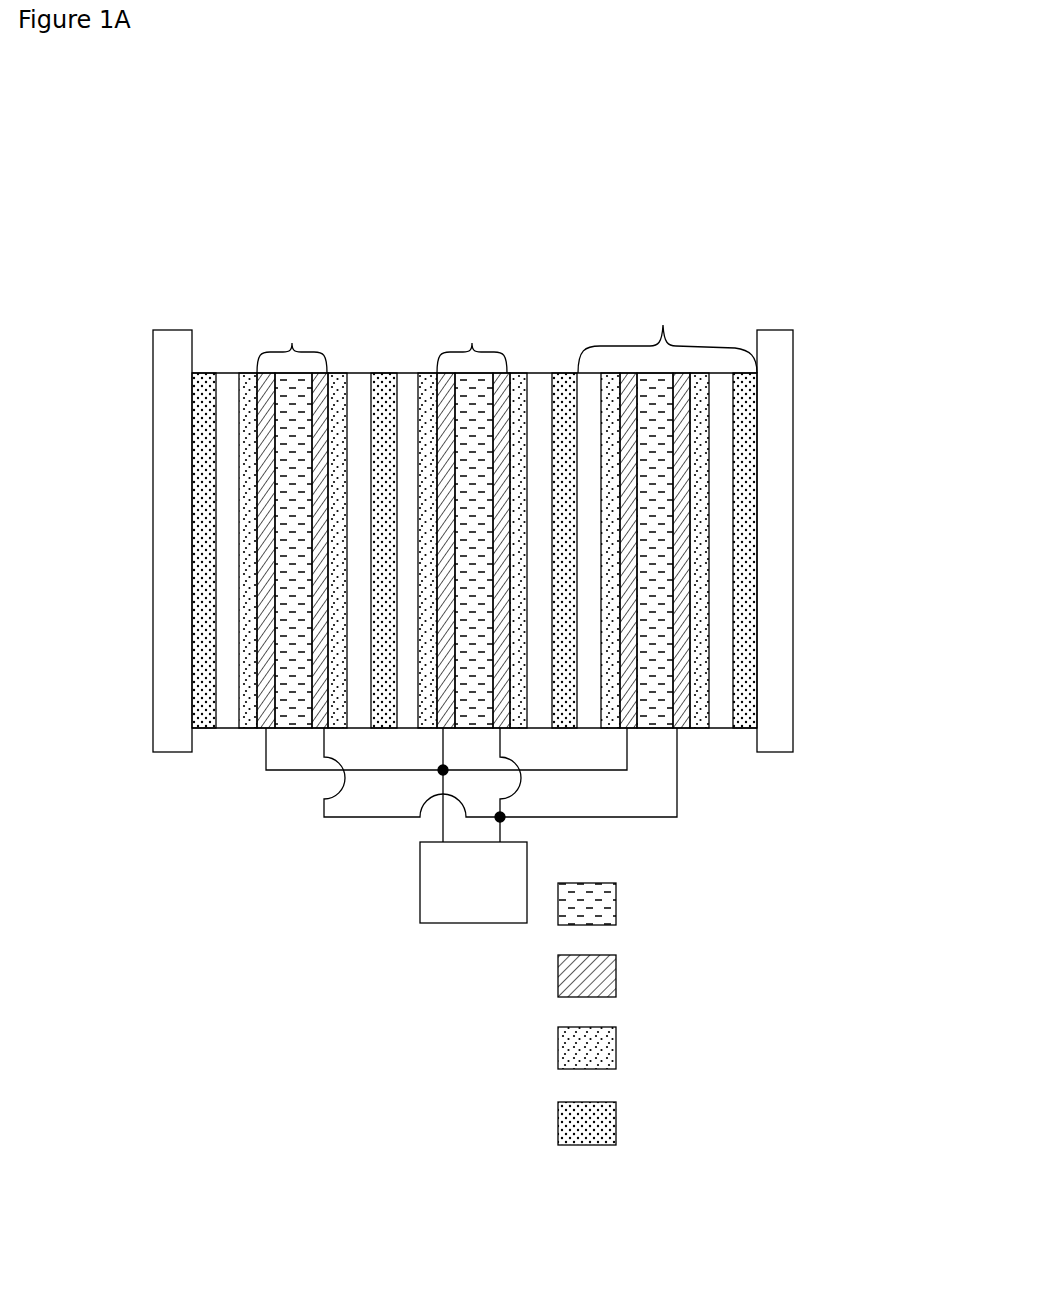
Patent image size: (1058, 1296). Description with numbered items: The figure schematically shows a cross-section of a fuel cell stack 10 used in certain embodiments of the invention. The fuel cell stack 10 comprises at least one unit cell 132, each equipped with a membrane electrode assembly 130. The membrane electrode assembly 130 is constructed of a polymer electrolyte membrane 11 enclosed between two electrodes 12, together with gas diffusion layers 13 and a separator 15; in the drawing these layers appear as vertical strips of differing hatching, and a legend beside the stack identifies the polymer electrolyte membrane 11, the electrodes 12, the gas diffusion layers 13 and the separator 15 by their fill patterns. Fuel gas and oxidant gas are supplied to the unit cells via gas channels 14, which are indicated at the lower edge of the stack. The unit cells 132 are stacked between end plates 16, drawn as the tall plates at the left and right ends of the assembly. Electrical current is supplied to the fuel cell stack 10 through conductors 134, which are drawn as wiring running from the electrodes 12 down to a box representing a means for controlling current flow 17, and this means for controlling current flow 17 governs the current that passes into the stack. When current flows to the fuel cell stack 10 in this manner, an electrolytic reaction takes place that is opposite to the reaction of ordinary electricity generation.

The fuel cell stack 10 is at (828, 373).
The polymer electrolyte membrane 11 is at (474, 649).
The electrodes 12 is at (473, 685).
The gas diffusion layers 13 is at (474, 721).
The gas channels 14 is at (355, 729).
The separator 15 is at (474, 759).
The end plates 16 is at (200, 343).
The means for controlling current flow 17 is at (440, 900).
The membrane electrode assembly 130 is at (472, 343).
The unit cell 132 is at (667, 328).
The conductors 134 is at (632, 758).